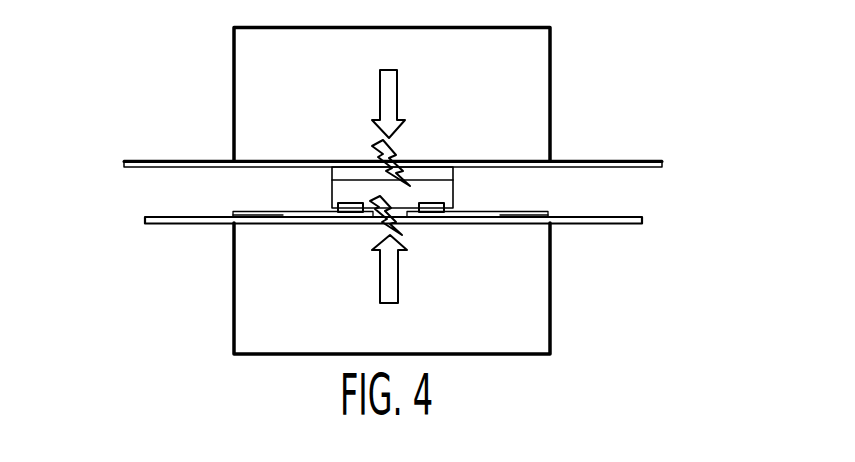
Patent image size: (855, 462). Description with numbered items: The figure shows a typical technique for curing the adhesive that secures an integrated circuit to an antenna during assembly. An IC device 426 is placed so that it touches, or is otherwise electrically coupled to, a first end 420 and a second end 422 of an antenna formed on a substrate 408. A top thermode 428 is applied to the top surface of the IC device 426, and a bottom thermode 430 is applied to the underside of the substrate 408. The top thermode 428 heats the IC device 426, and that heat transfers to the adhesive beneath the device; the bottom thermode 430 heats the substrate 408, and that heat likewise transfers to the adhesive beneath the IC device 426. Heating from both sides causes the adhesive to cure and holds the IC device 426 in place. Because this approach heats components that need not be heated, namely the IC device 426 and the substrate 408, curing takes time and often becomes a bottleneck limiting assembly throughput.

The substrate 408 is at (163, 217).
The first end of antenna 420 is at (255, 212).
The second end of antenna 422 is at (530, 213).
The IC device 426 is at (453, 183).
The top thermode 428 is at (535, 87).
The bottom thermode 430 is at (543, 331).